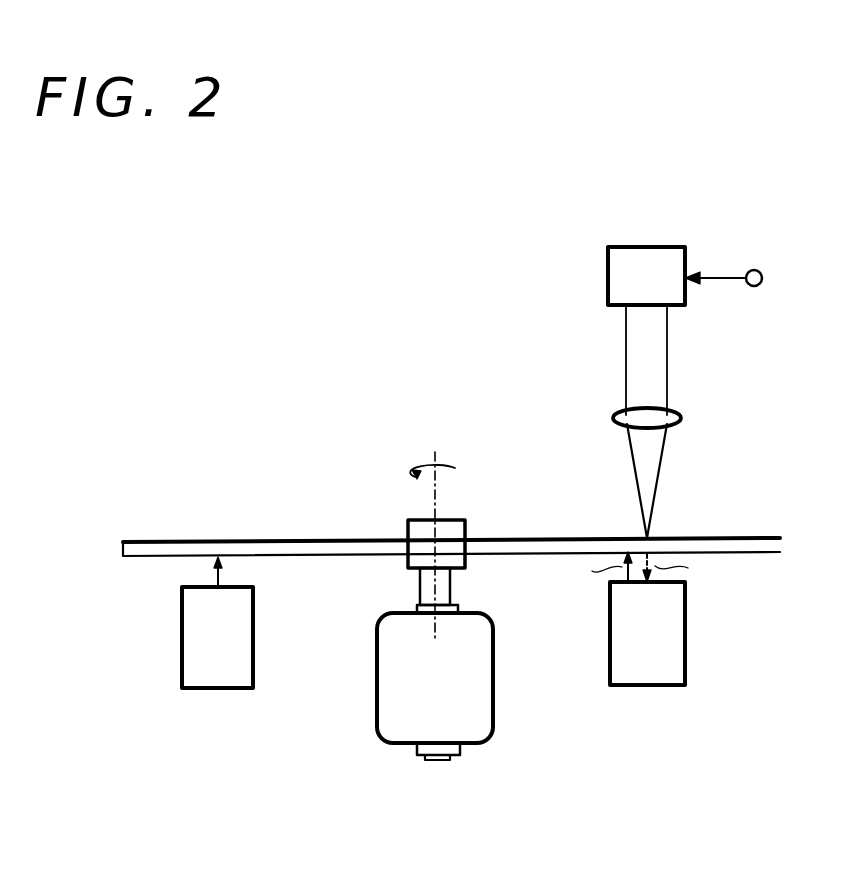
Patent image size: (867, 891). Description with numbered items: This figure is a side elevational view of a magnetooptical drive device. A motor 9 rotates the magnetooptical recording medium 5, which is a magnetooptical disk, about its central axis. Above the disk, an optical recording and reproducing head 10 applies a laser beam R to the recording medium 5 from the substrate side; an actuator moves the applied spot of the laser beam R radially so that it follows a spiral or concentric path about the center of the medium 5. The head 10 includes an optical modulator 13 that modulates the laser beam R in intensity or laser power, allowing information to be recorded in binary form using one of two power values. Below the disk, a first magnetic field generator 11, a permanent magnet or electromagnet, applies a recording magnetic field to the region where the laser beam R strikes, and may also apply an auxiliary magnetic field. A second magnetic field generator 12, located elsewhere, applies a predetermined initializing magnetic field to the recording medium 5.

The magnetooptical recording medium 5 is at (148, 543).
The motor 9 is at (495, 726).
The optical recording and reproducing head 10 is at (670, 421).
The first magnetic field generator 11 is at (685, 634).
The second magnetic field generator 12 is at (212, 690).
The optical modulator 13 is at (649, 247).
The laser beam R is at (655, 465).